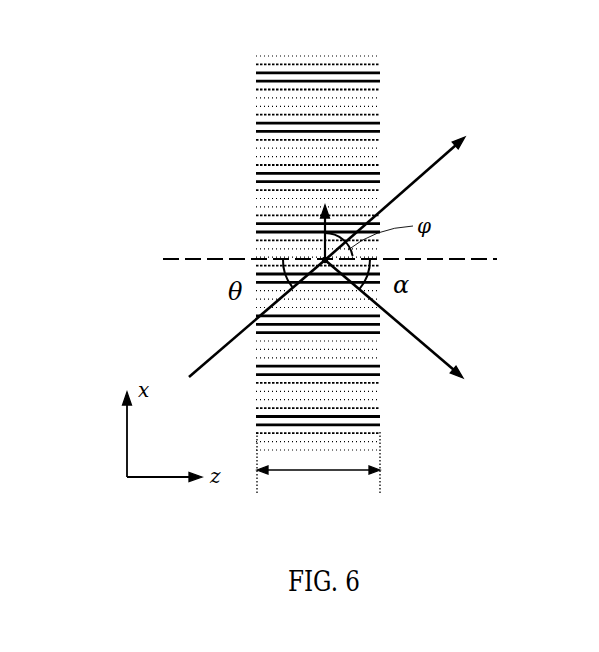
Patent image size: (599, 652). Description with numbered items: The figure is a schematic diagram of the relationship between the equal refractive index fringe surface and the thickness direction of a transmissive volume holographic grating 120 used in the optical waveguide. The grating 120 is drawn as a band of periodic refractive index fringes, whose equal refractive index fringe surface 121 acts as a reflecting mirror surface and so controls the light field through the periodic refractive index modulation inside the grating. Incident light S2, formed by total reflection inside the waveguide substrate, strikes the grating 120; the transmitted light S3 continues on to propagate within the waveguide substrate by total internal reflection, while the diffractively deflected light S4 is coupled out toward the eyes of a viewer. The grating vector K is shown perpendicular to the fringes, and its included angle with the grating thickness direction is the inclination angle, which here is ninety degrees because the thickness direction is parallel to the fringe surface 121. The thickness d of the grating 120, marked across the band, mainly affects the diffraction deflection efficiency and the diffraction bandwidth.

The grating 120 is at (117, 70).
The equal refractive index fringe surface 121 is at (353, 64).
The incident light S2 is at (255, 318).
The transmitted light S3 is at (398, 198).
The diffractively deflected light S4 is at (394, 319).
The grating vector K is at (314, 225).
The thickness d is at (318, 472).